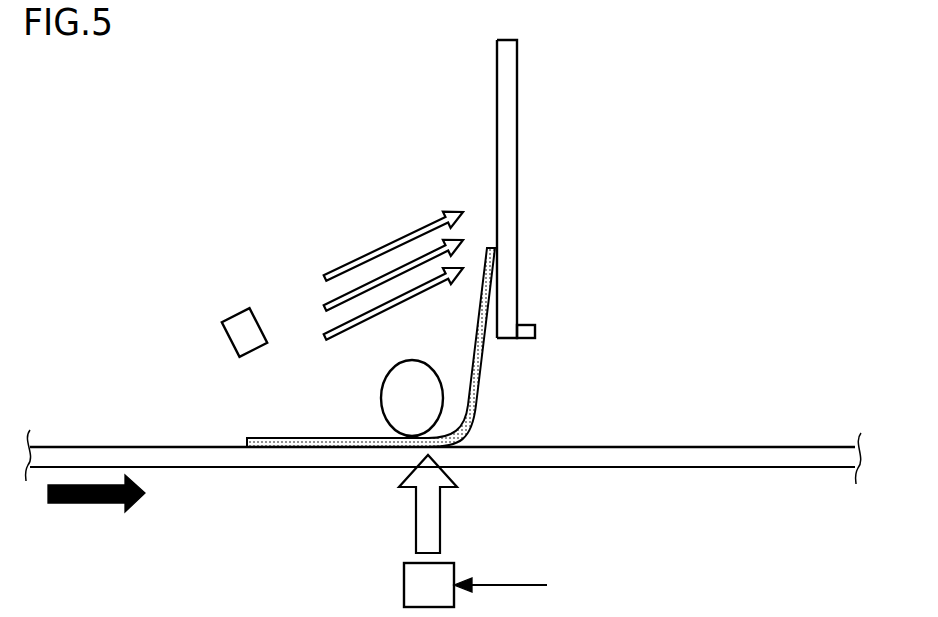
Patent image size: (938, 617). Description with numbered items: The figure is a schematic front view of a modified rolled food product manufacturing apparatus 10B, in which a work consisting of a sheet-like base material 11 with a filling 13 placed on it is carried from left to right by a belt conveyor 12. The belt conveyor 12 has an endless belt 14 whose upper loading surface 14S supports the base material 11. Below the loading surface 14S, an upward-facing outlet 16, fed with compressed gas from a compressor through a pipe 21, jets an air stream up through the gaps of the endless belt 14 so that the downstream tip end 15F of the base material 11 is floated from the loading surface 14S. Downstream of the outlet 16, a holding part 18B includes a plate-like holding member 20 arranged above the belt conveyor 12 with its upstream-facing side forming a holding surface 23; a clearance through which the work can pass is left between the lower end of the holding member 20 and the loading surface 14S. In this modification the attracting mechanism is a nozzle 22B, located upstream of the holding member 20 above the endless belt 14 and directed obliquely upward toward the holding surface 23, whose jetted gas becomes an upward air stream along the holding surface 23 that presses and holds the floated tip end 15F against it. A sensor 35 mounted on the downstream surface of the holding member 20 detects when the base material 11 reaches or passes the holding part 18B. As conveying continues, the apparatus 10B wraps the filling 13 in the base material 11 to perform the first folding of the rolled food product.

The manufacturing apparatus 10B is at (723, 122).
The base material 11 is at (268, 437).
The belt conveyor 12 is at (797, 427).
The filling 13 is at (388, 398).
The endless belt 14 is at (706, 445).
The loading surface 14S is at (722, 447).
The tip end 15F is at (487, 252).
The outlet 16 is at (404, 590).
The holding part 18B is at (530, 128).
The holding member 20 is at (518, 221).
The pipe 21 is at (505, 585).
The nozzle 22B is at (233, 316).
The holding surface 23 is at (497, 102).
The sensor 35 is at (536, 330).